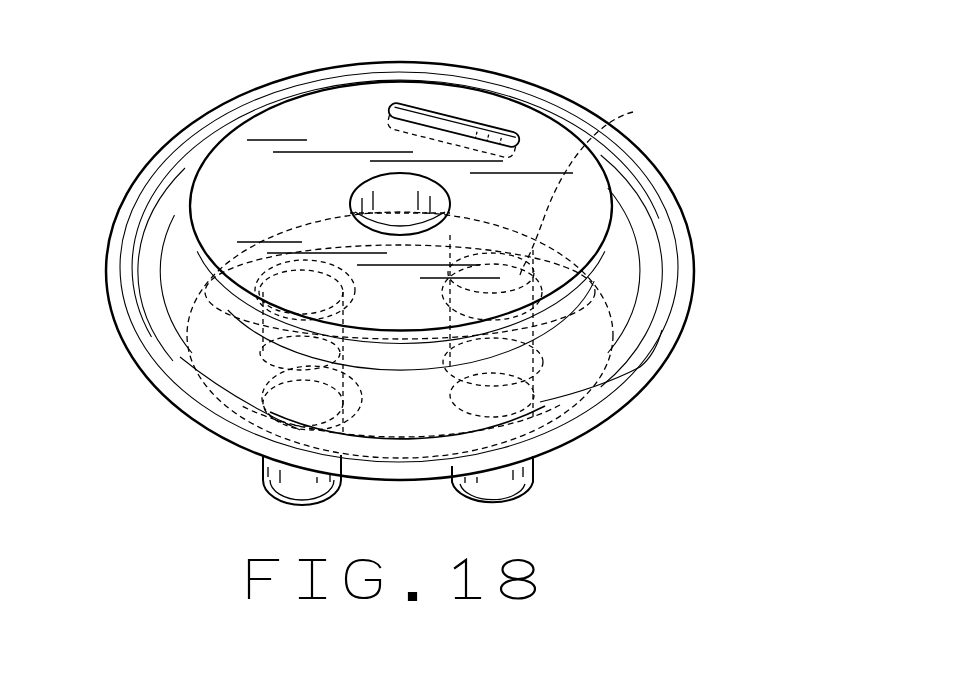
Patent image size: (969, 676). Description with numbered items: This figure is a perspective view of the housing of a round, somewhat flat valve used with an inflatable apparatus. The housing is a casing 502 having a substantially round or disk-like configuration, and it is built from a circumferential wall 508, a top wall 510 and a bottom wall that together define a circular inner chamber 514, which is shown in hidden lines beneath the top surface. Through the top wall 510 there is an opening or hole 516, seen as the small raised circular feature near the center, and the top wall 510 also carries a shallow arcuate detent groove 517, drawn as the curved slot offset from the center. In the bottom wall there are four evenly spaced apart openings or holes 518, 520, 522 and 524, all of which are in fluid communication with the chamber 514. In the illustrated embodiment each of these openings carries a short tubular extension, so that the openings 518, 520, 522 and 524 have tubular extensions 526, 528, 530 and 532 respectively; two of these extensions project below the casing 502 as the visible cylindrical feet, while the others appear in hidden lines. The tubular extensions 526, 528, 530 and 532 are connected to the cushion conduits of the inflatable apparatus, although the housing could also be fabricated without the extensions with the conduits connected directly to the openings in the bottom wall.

The casing 502 is at (668, 172).
The circumferential wall 508 is at (664, 300).
The top wall 510 is at (562, 152).
The inner chamber 514 is at (633, 113).
The opening or hole 516 is at (377, 176).
The detent groove 517 is at (468, 121).
The opening or hole 518 is at (245, 441).
The opening or hole 520 is at (422, 440).
The opening or hole 522 is at (660, 251).
The opening or hole 524 is at (190, 286).
The tubular extension 526 is at (291, 502).
The tubular extension 528 is at (528, 490).
The tubular extension 530 is at (680, 212).
The tubular extension 532 is at (235, 377).